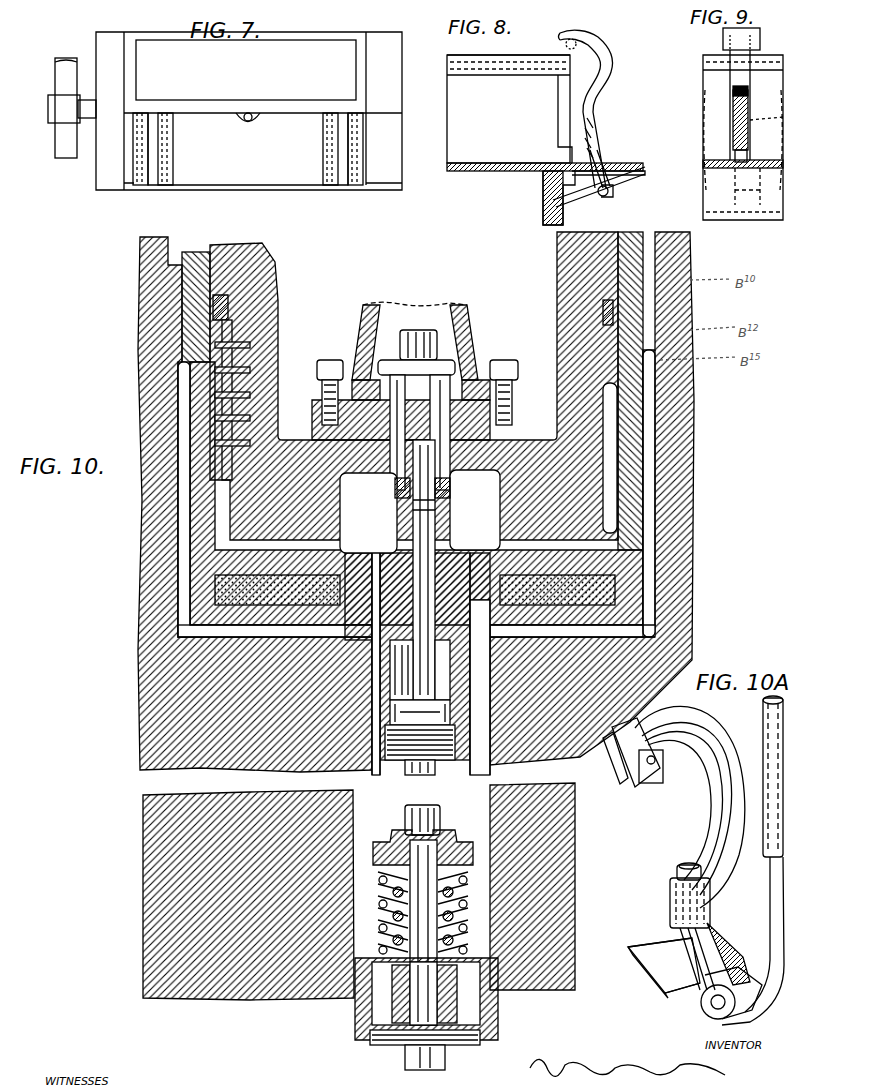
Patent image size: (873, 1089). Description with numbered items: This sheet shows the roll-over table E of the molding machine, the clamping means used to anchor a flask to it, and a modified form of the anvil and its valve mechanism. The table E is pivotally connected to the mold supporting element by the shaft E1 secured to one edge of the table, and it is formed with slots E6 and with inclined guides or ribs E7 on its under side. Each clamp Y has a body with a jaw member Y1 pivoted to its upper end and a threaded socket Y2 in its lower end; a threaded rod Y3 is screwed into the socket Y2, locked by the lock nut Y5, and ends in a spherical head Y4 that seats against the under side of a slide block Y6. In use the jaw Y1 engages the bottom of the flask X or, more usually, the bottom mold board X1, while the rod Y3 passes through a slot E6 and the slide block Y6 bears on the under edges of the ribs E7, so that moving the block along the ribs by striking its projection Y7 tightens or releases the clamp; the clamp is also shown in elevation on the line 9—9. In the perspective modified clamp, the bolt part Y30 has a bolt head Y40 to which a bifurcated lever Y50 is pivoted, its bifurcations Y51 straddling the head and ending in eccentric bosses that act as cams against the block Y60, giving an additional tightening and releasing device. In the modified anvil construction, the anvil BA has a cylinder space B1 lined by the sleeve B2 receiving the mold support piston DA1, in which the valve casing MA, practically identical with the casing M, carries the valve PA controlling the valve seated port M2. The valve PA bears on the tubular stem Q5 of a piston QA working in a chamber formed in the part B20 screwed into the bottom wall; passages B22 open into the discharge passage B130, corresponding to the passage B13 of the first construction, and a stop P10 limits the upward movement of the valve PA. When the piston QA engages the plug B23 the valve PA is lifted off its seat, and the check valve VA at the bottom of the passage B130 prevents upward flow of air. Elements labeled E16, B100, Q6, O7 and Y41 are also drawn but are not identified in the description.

In FIG. 7, the roll-over table E is at (100, 168).
In FIG. 8, the roll-over table E is at (492, 171).
In FIG. 7, the shaft E1 is at (58, 142).
In FIG. 7, the slot E6 is at (158, 143).
In FIG. 7, the inclined guides or ribs E7 is at (138, 170).
In FIG. 8, the inclined guides or ribs E7 is at (632, 178).
In FIG. 8, the plate E16 is at (632, 163).
In FIG. 8, the flask X is at (509, 109).
In FIG. 8, the bottom mold board X1 is at (508, 79).
In FIG. 8, the clamp Y is at (603, 55).
In FIG. 9, the clamp Y is at (730, 137).
In FIG. 10A, the clamp Y is at (674, 807).
In FIG. 9, the jaw member Y1 is at (725, 45).
In FIG. 9, the threaded socket Y2 is at (748, 112).
In FIG. 9, the threaded rod Y3 is at (776, 116).
In FIG. 8, the spherical head Y4 is at (598, 197).
In FIG. 9, the spherical head Y4 is at (743, 190).
In FIG. 8, the lock nut Y5 is at (599, 152).
In FIG. 9, the lock nut Y5 is at (735, 155).
In FIG. 8, the slide block Y6 is at (598, 186).
In FIG. 8, the projection Y7 is at (618, 190).
In FIG. 8, the section line 9 is at (578, 106).
In FIG. 10, the anvil BA is at (142, 688).
In FIG. 10, the cylinder space B1 is at (214, 492).
In FIG. 10, the sleeve B2 is at (190, 287).
In FIG. 10, the outer wall B100 is at (650, 492).
In FIG. 10, the mold support piston DA1 is at (258, 279).
In FIG. 10, the valve casing M is at (462, 316).
In FIG. 10, the valve casing MA is at (360, 328).
In FIG. 10, the valve seated port M2 is at (493, 432).
In FIG. 10, the valve PA is at (455, 362).
In FIG. 10, the part B20 is at (395, 565).
In FIG. 10, the gland Q6 is at (398, 522).
In FIG. 10, the stop P10 is at (437, 490).
In FIG. 10, the collar O7 is at (437, 514).
In FIG. 10, the tubular stem Q5 is at (445, 528).
In FIG. 10, the passage B13 is at (392, 662).
In FIG. 10, the passages B22 is at (452, 660).
In FIG. 10, the piston QA is at (392, 716).
In FIG. 10, the plug B23 is at (440, 762).
In FIG. 10, the discharge passage B130 is at (359, 891).
In FIG. 10, the check valve VA is at (358, 1050).
In FIG. 10A, the lever Y50 is at (772, 916).
In FIG. 10A, the bolt part Y30 is at (672, 940).
In FIG. 10A, the block Y60 is at (660, 998).
In FIG. 10A, the bolt head Y40 is at (705, 1010).
In FIG. 10A, the pivot Y41 is at (700, 1008).
In FIG. 10A, the bifurcations Y51 is at (745, 1010).